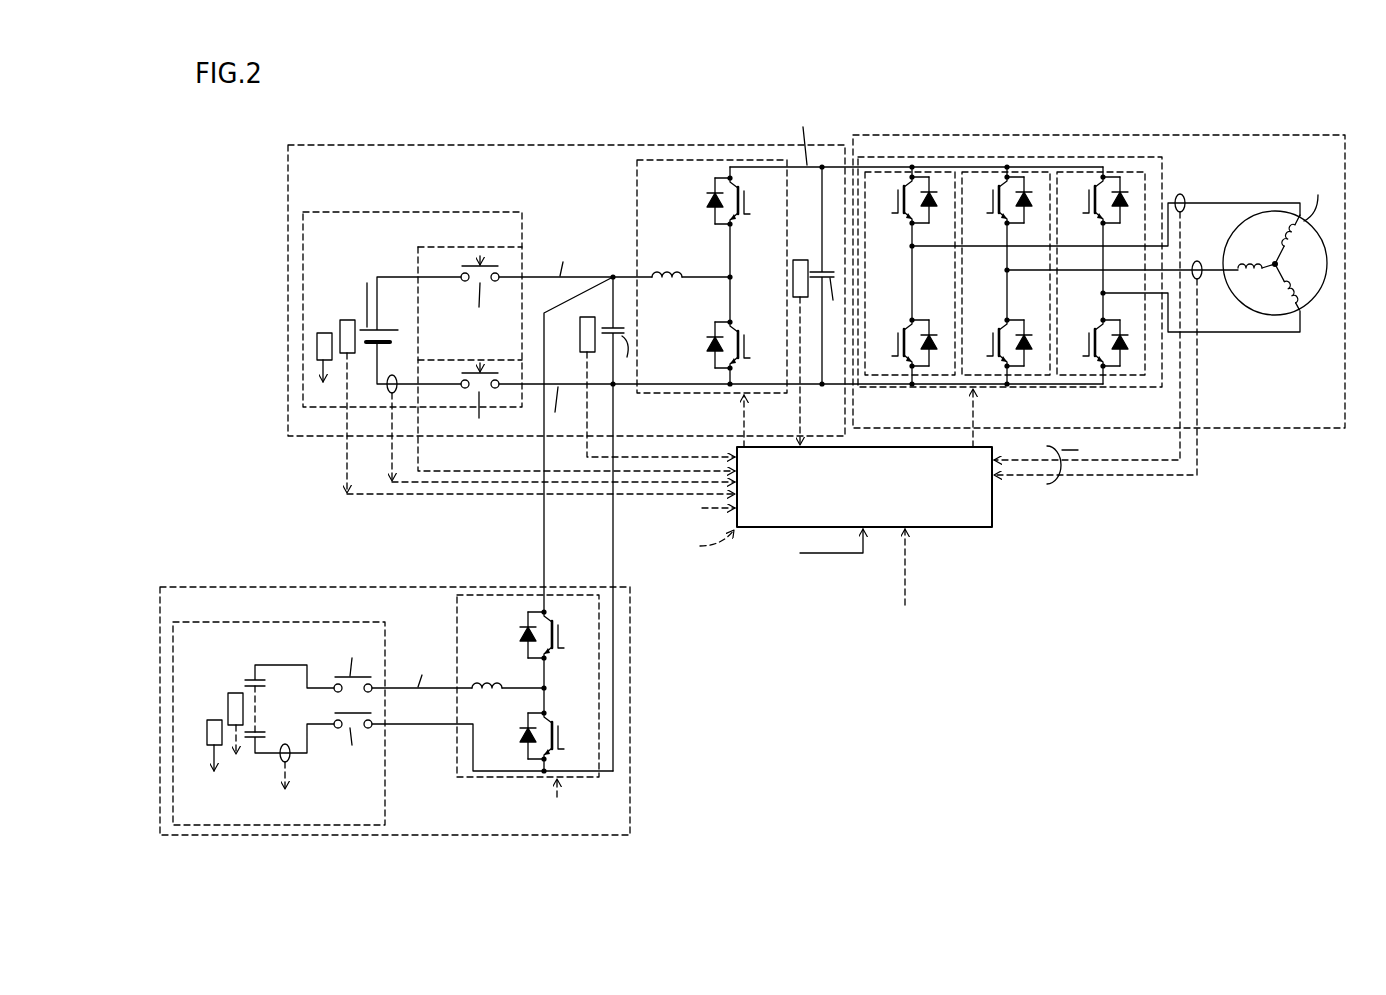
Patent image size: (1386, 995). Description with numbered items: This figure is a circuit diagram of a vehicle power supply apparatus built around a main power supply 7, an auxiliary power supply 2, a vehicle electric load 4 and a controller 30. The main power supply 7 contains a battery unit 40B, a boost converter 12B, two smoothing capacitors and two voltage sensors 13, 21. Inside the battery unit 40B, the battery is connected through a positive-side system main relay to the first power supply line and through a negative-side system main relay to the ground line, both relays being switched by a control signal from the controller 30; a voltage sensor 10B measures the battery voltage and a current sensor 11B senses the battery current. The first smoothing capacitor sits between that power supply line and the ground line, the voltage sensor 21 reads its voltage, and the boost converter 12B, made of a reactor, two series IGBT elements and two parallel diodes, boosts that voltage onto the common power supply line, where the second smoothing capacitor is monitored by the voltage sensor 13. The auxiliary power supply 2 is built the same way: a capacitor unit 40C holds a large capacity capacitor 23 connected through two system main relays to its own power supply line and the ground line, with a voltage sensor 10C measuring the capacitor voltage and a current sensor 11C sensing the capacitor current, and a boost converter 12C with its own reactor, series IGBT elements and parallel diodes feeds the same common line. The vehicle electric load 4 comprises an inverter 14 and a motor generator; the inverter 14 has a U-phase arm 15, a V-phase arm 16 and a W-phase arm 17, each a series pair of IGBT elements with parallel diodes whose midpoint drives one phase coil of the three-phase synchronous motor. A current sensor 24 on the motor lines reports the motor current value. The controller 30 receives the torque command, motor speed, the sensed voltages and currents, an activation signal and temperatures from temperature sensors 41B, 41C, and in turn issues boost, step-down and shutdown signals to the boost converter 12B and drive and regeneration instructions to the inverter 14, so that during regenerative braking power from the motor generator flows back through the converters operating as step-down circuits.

The auxiliary power supply 2 is at (343, 588).
The vehicle electric load 4 is at (1272, 134).
The main power supply 7 is at (710, 144).
The voltage sensor 10B is at (348, 318).
The voltage sensor 10C is at (228, 707).
The current sensor 11B is at (393, 380).
The current sensor 11C is at (282, 746).
The boost converter 12B is at (637, 184).
The boost converter 12C is at (457, 617).
The voltage sensor 13 is at (800, 260).
The inverter 14 is at (880, 157).
The U-phase arm 15 is at (938, 170).
The V-phase arm 16 is at (1033, 170).
The W-phase arm 17 is at (1127, 168).
The voltage sensor 21 is at (580, 343).
The large capacity capacitor 23 is at (243, 688).
The current sensor 24 is at (1180, 194).
The controller 30 is at (948, 528).
The battery unit 40B is at (522, 228).
The capacitor unit 40C is at (385, 787).
The temperature sensor 41B is at (323, 332).
The temperature sensor 41C is at (207, 731).